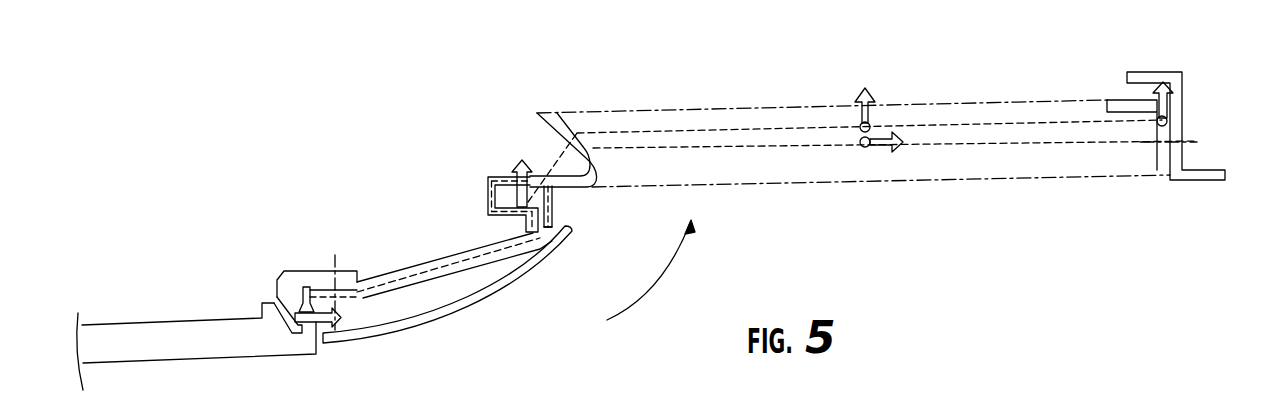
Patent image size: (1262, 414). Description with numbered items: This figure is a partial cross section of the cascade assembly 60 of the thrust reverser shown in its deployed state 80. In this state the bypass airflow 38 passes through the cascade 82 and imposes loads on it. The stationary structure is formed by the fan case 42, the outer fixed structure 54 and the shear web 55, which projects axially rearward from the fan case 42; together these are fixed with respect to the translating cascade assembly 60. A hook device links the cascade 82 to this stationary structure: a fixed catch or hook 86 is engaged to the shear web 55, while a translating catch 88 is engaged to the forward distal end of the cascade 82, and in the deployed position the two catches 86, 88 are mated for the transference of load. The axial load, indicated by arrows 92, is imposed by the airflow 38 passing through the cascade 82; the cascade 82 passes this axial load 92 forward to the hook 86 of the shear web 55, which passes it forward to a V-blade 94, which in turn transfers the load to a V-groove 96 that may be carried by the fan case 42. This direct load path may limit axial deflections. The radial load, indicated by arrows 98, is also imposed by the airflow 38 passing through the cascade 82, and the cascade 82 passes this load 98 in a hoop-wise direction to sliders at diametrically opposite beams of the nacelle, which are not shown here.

The bypass airflow 38 is at (683, 257).
The fan case 42 is at (139, 323).
The outer fixed structure 54 is at (467, 313).
The shear web 55 is at (410, 268).
The cascade assembly 60 is at (341, 68).
The deployed state 80 is at (393, 110).
The cascade 82 is at (977, 102).
The fixed catch or hook 86 is at (553, 208).
The translating catch 88 is at (488, 195).
The axial load arrows 92 is at (316, 328).
The V-blade 94 is at (275, 292).
The V-groove 96 is at (252, 290).
The radial load arrows 98 is at (515, 172).